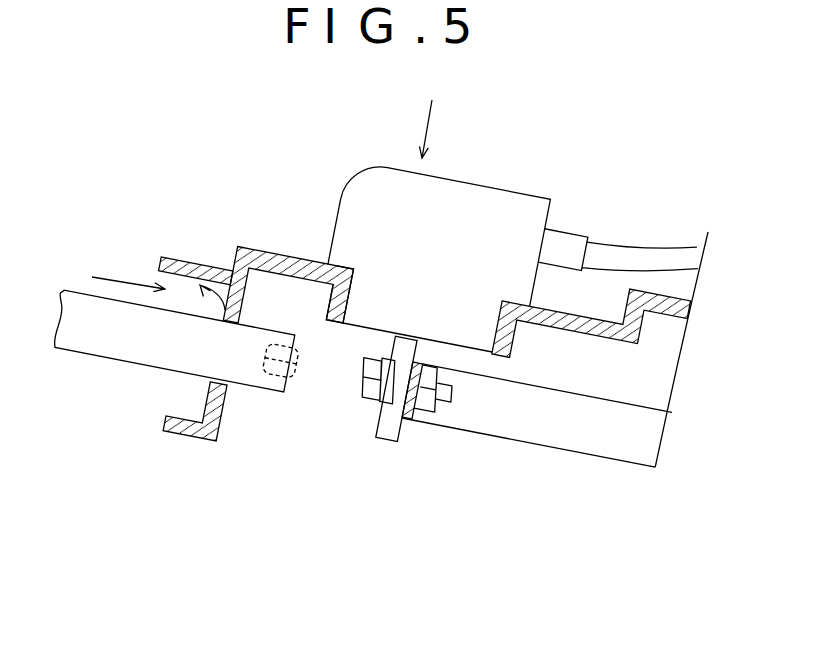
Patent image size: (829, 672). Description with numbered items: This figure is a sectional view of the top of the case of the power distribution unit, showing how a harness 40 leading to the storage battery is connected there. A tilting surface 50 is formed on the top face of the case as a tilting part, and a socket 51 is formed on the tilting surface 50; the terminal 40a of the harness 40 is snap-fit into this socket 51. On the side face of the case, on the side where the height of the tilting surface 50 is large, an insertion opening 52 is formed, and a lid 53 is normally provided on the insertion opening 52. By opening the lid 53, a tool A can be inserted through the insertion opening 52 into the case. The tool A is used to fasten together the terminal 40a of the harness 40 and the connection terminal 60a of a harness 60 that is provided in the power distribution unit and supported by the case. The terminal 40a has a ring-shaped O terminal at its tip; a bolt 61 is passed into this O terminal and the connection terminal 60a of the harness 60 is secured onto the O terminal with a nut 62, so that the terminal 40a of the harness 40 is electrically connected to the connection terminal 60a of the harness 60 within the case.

The harness 40 is at (641, 247).
The terminal of the harness 40a is at (498, 189).
The tilting surface 50 is at (306, 261).
The socket 51 is at (355, 265).
The insertion opening 52 is at (217, 377).
The lid 53 is at (200, 264).
The harness 60 is at (557, 432).
The connection terminal of the harness 60a is at (403, 418).
The bolt 61 is at (365, 398).
The nut 62 is at (428, 407).
The tool A is at (242, 372).